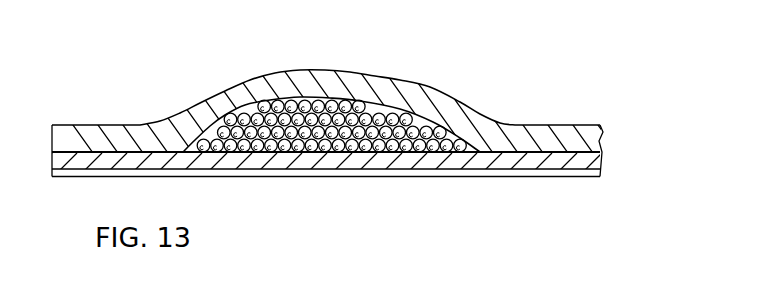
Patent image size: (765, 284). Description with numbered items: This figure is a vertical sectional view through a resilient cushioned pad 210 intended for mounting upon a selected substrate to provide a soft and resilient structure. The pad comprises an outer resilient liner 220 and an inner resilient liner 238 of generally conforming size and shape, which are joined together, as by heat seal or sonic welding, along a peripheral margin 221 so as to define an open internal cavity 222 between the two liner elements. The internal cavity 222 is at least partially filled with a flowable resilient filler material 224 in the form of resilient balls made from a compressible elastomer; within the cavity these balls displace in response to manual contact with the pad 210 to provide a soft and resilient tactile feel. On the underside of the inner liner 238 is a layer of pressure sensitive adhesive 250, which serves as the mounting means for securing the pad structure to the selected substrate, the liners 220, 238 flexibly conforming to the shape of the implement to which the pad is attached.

The resilient cushioned pad 210 is at (337, 125).
The outer resilient liner 220 is at (298, 70).
The peripheral margin 221 is at (90, 126).
The internal cavity 222 is at (372, 113).
The resilient filler material 224 is at (277, 125).
The inner resilient liner 238 is at (315, 168).
The pressure sensitive adhesive 250 is at (552, 176).